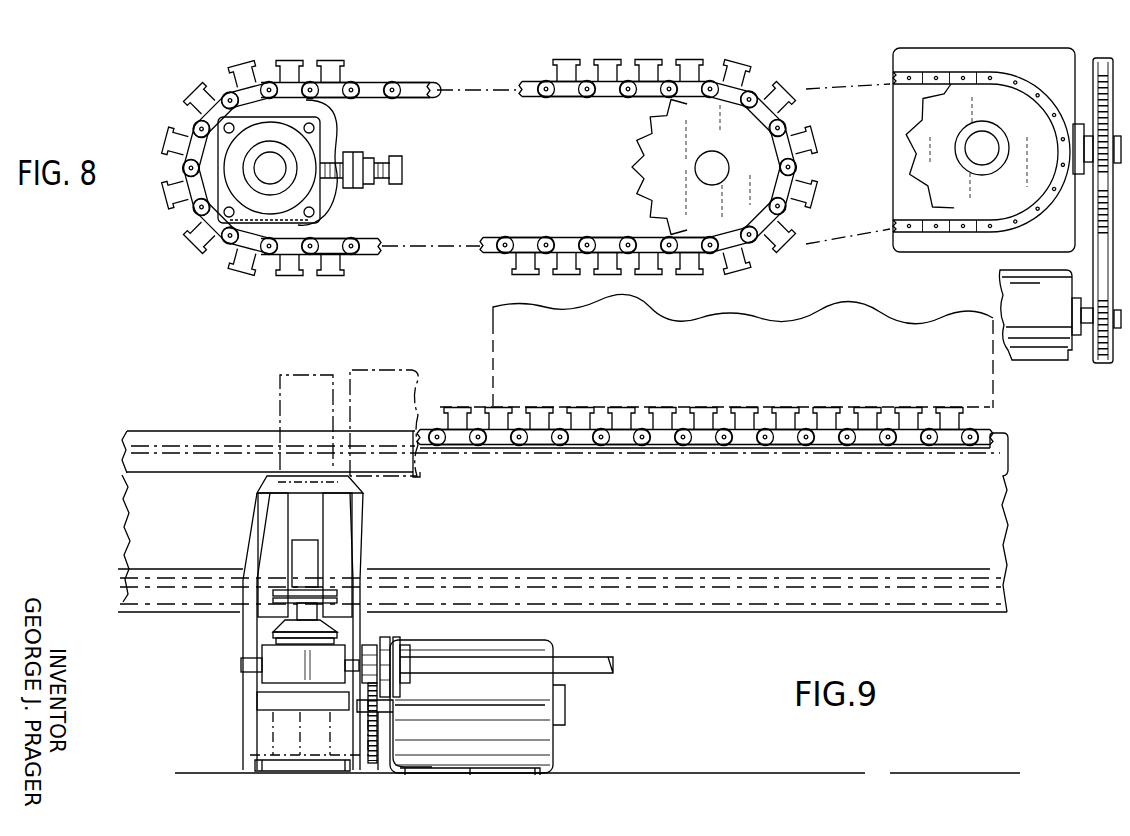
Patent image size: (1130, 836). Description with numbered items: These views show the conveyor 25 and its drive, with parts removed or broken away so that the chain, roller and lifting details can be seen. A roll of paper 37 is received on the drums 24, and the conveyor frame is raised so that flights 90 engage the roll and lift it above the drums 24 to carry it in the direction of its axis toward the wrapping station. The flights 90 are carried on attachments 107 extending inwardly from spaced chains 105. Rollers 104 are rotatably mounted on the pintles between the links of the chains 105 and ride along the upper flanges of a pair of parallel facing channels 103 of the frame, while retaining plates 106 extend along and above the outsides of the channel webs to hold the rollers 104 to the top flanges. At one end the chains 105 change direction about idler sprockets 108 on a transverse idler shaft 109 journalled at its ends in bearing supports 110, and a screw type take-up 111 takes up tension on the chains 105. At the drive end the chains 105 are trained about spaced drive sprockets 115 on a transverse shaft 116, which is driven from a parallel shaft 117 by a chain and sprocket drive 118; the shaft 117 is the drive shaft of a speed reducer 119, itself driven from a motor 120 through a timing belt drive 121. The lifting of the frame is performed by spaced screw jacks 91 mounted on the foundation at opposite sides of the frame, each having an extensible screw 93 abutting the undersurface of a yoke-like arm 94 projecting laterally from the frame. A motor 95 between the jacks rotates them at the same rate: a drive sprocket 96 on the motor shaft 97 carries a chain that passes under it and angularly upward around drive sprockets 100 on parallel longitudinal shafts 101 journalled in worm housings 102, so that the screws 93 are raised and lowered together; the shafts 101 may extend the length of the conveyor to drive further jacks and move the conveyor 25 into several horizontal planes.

In FIG. 9, the drums 24 is at (370, 372).
In FIG. 8, the conveyor 25 is at (228, 280).
In FIG. 9, the roll of paper 37 is at (490, 336).
In FIG. 8, the flights 90 is at (290, 60).
In FIG. 9, the flights 90 is at (457, 404).
In FIG. 9, the screw jacks 91 is at (256, 651).
In FIG. 9, the screw 93 is at (303, 612).
In FIG. 9, the yoke-like arms 94 is at (312, 555).
In FIG. 9, the motor 95 is at (553, 743).
In FIG. 9, the drive sprocket 96 is at (380, 770).
In FIG. 9, the motor shaft 97 is at (385, 723).
In FIG. 9, the drive sprockets 100 is at (376, 637).
In FIG. 9, the longitudinal shafts 101 is at (515, 660).
In FIG. 9, the worm housings 102 is at (270, 678).
In FIG. 9, the channels 103 is at (992, 531).
In FIG. 8, the rollers 104 is at (400, 84).
In FIG. 9, the rollers 104 is at (597, 425).
In FIG. 8, the chains 105 is at (378, 83).
In FIG. 9, the chains 105 is at (577, 448).
In FIG. 9, the retaining plates 106 is at (221, 430).
In FIG. 9, the attachments 107 is at (748, 421).
In FIG. 8, the idler sprockets 108 is at (328, 118).
In FIG. 8, the idler shaft 109 is at (257, 172).
In FIG. 8, the bearing supports 110 is at (300, 188).
In FIG. 8, the take-up 111 is at (402, 168).
In FIG. 8, the drive sprockets 115 is at (632, 185).
In FIG. 8, the transverse shaft 116 is at (722, 173).
In FIG. 8, the shaft 117 is at (988, 140).
In FIG. 8, the chain and sprocket drive 118 is at (942, 72).
In FIG. 8, the speed reducer 119 is at (1035, 57).
In FIG. 8, the motor 120 is at (1000, 300).
In FIG. 8, the timing belt drive 121 is at (1098, 365).